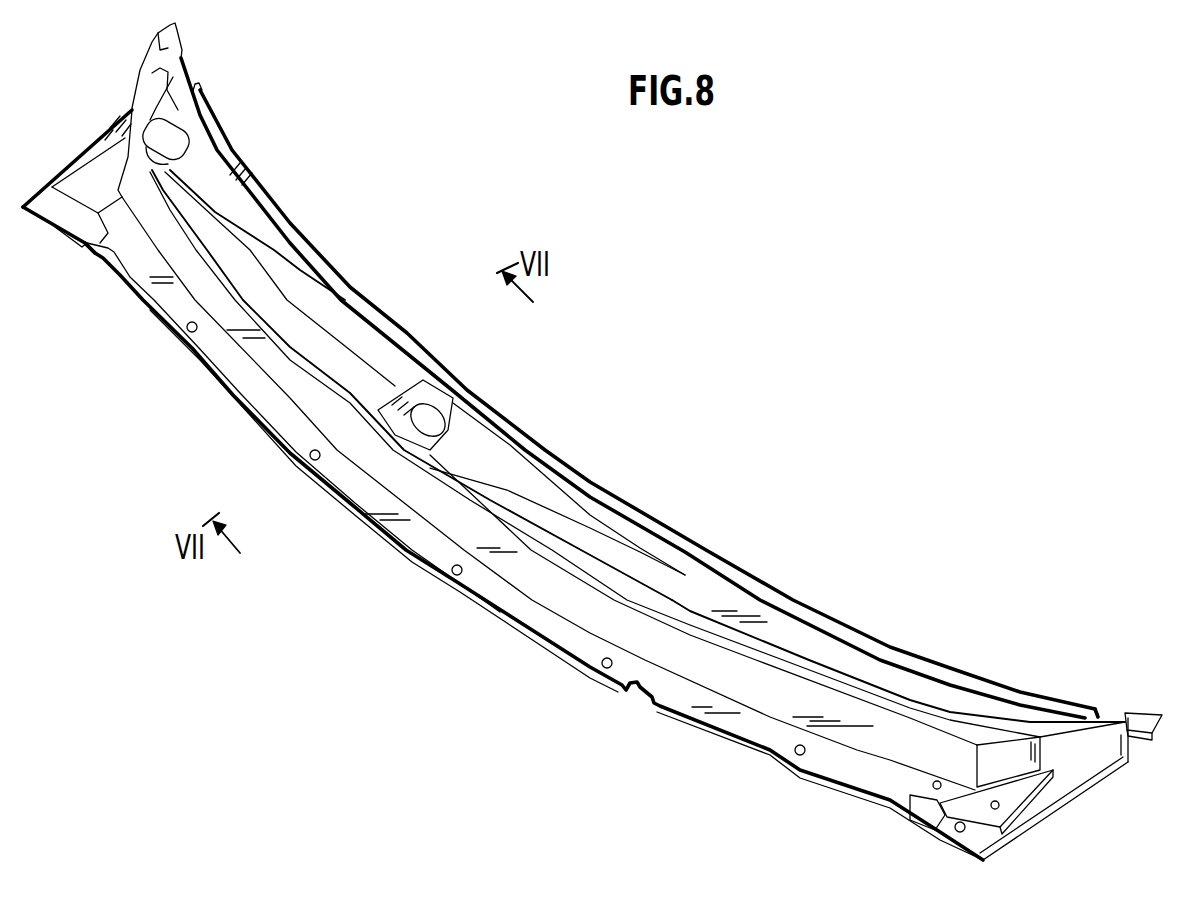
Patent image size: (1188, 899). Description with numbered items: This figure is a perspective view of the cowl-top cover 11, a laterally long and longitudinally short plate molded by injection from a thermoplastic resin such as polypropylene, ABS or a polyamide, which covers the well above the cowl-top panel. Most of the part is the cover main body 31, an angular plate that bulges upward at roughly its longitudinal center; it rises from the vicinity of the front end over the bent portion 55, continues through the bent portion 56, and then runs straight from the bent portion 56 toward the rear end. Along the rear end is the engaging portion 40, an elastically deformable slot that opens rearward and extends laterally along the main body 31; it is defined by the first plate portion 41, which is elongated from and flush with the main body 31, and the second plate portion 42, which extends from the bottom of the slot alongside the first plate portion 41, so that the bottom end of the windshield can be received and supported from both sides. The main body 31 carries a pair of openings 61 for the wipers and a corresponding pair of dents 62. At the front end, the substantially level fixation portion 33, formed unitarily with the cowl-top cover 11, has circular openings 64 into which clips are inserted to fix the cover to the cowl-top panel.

The cowl-top cover 11 is at (676, 447).
The cover main body 31 is at (663, 570).
The fixation portion 33 is at (547, 626).
The engaging portion 40 is at (452, 376).
The first plate portion 41 is at (408, 335).
The second plate portion 42 is at (383, 333).
The bent portion 55 is at (663, 607).
The bent portion 56 is at (817, 663).
The opening for wiper 61 is at (170, 135).
The dent 62 is at (250, 200).
The circular opening 64 is at (192, 332).